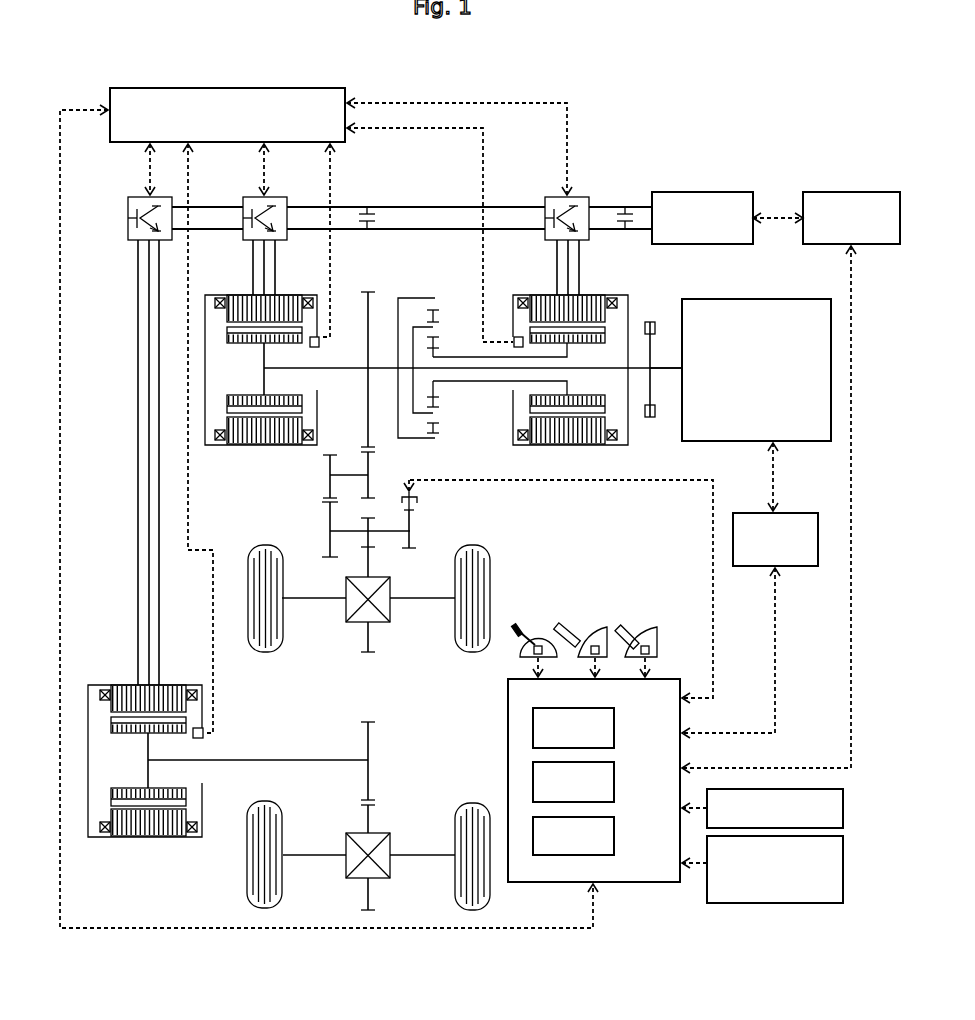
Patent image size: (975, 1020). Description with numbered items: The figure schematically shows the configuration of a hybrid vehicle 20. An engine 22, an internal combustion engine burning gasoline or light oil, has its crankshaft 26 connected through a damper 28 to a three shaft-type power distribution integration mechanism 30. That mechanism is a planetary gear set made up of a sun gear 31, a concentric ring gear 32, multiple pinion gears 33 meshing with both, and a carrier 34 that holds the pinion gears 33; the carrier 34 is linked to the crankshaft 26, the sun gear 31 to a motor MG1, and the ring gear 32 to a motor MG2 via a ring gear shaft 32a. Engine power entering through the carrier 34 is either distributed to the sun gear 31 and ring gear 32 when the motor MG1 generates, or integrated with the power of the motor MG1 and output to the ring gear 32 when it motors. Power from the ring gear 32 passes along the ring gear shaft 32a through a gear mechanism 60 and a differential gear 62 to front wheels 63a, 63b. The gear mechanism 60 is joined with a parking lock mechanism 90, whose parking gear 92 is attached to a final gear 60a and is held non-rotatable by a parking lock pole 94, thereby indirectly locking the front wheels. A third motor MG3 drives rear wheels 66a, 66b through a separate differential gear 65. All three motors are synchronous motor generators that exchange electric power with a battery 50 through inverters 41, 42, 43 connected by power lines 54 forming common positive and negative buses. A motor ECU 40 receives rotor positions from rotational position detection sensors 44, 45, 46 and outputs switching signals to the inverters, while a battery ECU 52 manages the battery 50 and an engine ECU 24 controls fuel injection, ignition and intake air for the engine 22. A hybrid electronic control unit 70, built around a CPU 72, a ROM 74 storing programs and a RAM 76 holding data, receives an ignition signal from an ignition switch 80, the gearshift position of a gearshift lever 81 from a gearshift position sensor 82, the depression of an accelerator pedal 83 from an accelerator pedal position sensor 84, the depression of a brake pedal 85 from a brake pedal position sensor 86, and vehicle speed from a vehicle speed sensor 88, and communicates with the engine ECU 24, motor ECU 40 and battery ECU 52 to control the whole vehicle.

The hybrid vehicle 20 is at (627, 92).
The engine 22 is at (757, 299).
The engine ECU 24 is at (757, 513).
The crankshaft 26 is at (665, 372).
The damper 28 is at (650, 418).
The power distribution integration mechanism 30 is at (446, 352).
The sun gear 31 is at (439, 400).
The ring gear 32 is at (440, 437).
The ring gear shaft 32a is at (386, 368).
The pinion gears 33 is at (440, 420).
The carrier 34 is at (437, 340).
The motor ECU 40 is at (228, 87).
The inverter 41 is at (583, 196).
The inverter 42 is at (256, 197).
The inverter 43 is at (141, 197).
The rotational position detection sensor 44 is at (516, 337).
The rotational position detection sensor 45 is at (314, 336).
The rotational position detection sensor 46 is at (200, 727).
The battery 50 is at (705, 192).
The battery ECU 52 is at (852, 192).
The power lines 54 is at (405, 228).
The gear mechanism 60 is at (328, 514).
The final gear 60a is at (330, 531).
The differential gear 62 is at (389, 613).
The front wheel 63a is at (282, 610).
The front wheel 63b is at (455, 610).
The differential gear 65 is at (393, 875).
The rear wheel 66a is at (285, 842).
The rear wheel 66b is at (452, 842).
The hybrid electronic control unit 70 is at (594, 814).
The CPU 72 is at (614, 728).
The ROM 74 is at (614, 782).
The RAM 76 is at (614, 836).
The ignition switch 80 is at (844, 808).
The gearshift lever 81 is at (521, 631).
The gearshift position sensor 82 is at (541, 645).
The accelerator pedal 83 is at (584, 628).
The accelerator pedal position sensor 84 is at (600, 642).
The brake pedal 85 is at (631, 630).
The brake pedal position sensor 86 is at (645, 642).
The vehicle speed sensor 88 is at (844, 866).
The parking lock mechanism 90 is at (467, 518).
The parking gear 92 is at (414, 521).
The parking lock pole 94 is at (418, 497).
The motor MG1 is at (593, 294).
The motor MG2 is at (264, 446).
The motor MG3 is at (148, 838).